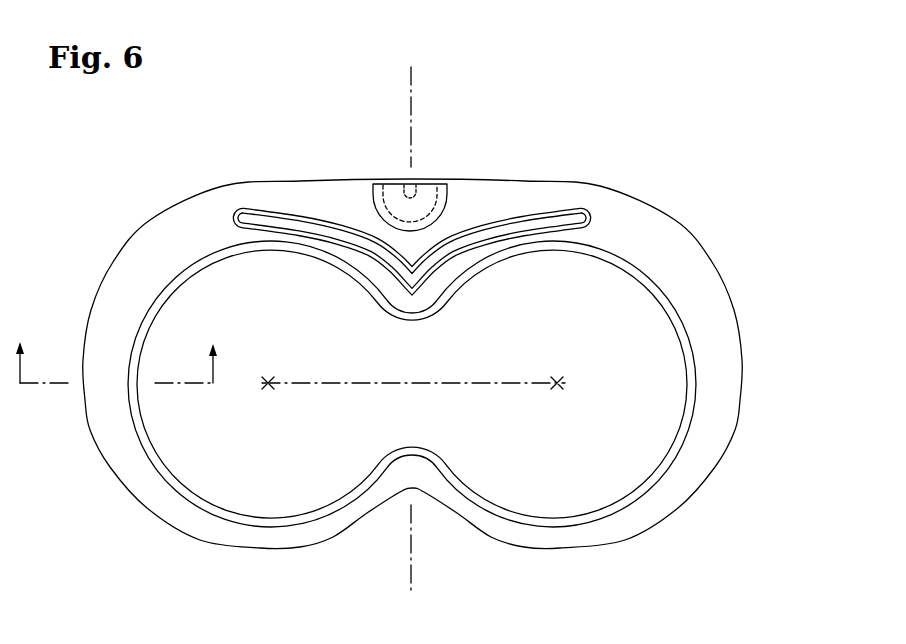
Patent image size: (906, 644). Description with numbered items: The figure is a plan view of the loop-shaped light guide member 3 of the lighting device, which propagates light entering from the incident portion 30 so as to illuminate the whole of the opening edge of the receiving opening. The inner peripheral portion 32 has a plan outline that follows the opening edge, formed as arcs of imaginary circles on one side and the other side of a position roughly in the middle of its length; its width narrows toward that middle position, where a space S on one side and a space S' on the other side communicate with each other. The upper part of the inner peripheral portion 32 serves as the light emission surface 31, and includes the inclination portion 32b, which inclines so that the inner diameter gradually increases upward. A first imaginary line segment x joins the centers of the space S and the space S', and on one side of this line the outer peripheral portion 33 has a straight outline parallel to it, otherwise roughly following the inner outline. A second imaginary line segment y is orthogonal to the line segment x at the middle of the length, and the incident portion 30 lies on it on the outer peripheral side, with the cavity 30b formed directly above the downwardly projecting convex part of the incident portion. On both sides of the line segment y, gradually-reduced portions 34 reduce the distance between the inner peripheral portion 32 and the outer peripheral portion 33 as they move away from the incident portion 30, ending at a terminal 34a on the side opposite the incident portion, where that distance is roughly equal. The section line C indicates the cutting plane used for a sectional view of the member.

The light guide member 3 is at (652, 182).
The incident portion 30 is at (423, 202).
The cavity 30b is at (410, 207).
The light emission surface 31 is at (666, 288).
The inner peripheral portion 32 is at (472, 384).
The inclination portion 32b is at (684, 322).
The outer peripheral portion 33 is at (728, 434).
The gradually-reduced portions 34 is at (720, 380).
The terminal 34a is at (328, 527).
The space S is at (176, 503).
The space S' is at (659, 496).
The first imaginary line segment x is at (438, 383).
The second imaginary line segment y is at (411, 108).
The section line C- C is at (116, 348).